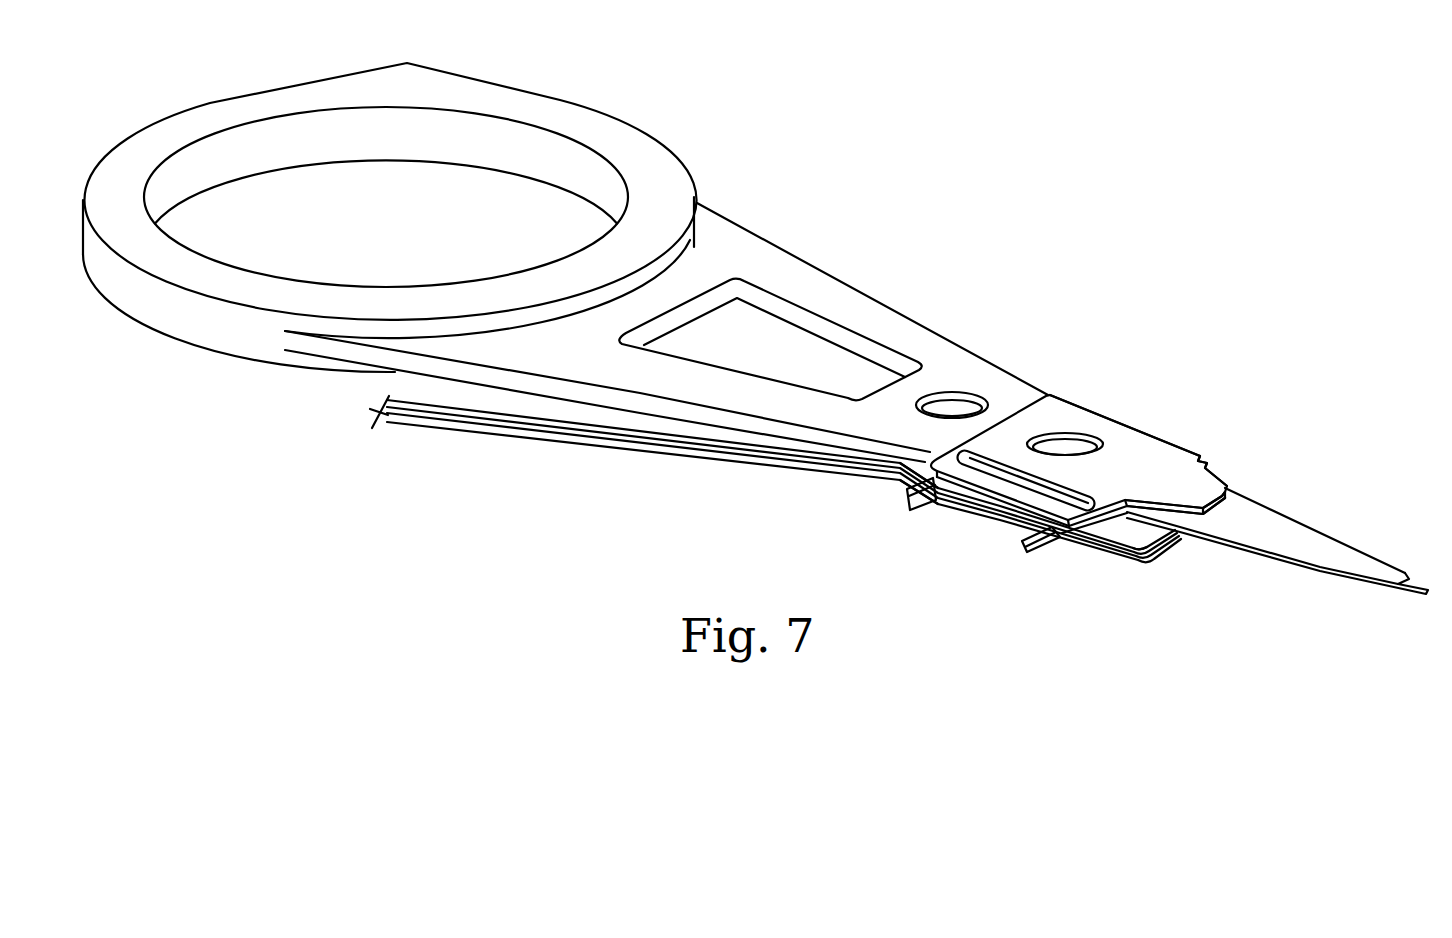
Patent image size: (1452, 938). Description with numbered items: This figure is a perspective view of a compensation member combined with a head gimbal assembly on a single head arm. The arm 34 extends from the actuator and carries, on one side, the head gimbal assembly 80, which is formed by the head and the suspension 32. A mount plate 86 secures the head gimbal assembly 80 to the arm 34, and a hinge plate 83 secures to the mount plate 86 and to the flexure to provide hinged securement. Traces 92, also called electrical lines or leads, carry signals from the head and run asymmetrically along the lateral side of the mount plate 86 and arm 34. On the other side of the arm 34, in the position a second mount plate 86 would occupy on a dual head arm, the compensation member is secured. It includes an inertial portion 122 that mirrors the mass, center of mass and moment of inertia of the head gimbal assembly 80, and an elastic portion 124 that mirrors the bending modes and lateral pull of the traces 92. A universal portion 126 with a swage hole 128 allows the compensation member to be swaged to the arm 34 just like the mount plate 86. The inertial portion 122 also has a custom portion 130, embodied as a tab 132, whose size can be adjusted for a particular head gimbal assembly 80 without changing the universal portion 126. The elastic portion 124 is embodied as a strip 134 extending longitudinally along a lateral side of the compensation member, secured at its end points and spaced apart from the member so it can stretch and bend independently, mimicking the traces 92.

The arm 34 is at (867, 317).
The suspension 32 is at (1199, 555).
The head gimbal assembly 80 is at (1333, 458).
The inertial portion 122 is at (1118, 387).
The swage hole 128 is at (1050, 433).
The universal portion 126 is at (1147, 431).
The tab 132 is at (1192, 491).
The custom portion 130 is at (1235, 521).
The strip 134 is at (1000, 500).
The mount plate 86 is at (933, 503).
The traces 92 is at (655, 446).
The elastic portion 124 is at (900, 469).
The hinge plate 83 is at (1146, 547).